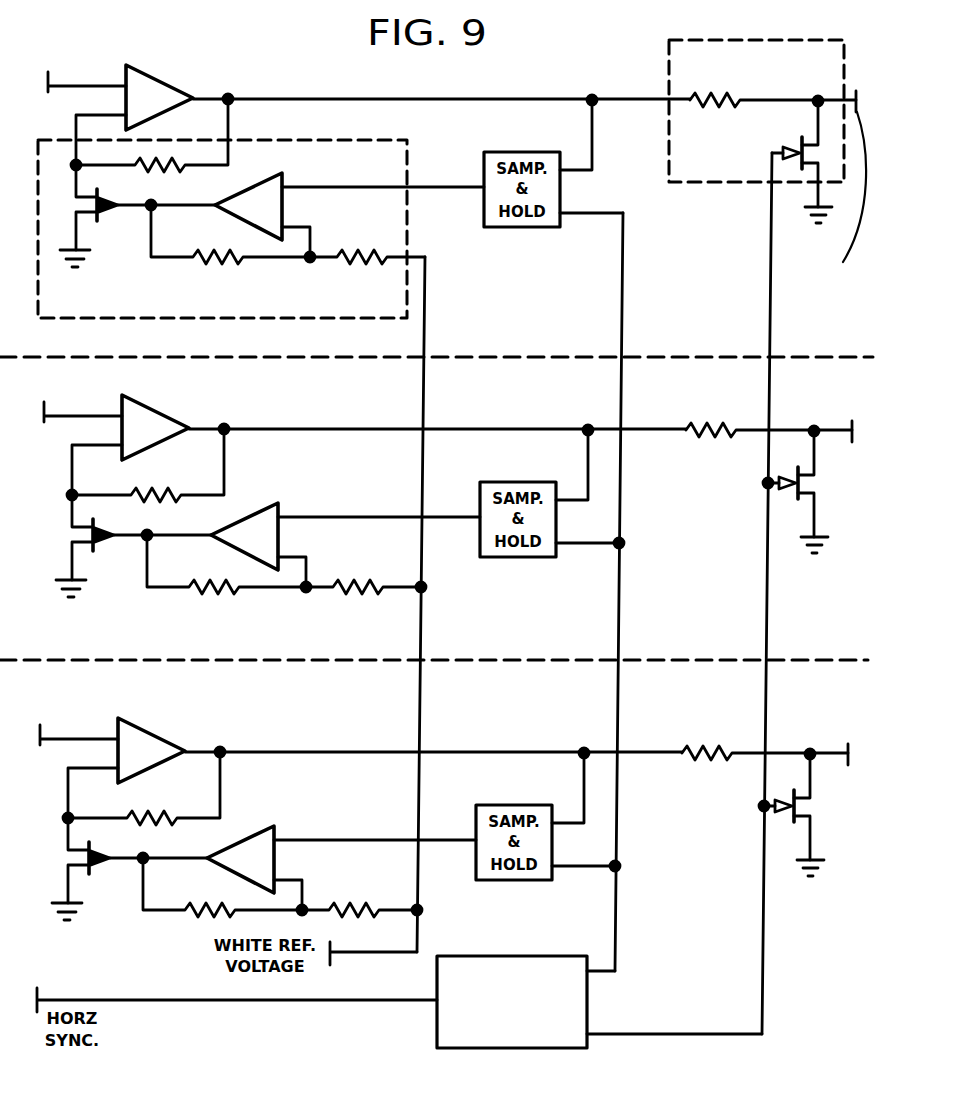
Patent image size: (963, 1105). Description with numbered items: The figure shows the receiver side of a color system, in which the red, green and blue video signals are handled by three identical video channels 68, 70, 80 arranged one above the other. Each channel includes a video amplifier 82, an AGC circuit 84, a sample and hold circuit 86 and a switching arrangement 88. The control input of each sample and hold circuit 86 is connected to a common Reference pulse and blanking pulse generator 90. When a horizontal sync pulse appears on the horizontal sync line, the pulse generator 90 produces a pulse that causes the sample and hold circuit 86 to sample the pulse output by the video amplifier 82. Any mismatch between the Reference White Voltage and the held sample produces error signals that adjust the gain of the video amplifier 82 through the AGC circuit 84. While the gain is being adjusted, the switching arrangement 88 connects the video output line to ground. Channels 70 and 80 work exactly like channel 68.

The video channel 68 is at (452, 176).
The video channel 70 is at (708, 605).
The video channel 80 is at (705, 887).
The video amplifier 82 is at (147, 79).
The AGC circuit 84 is at (363, 141).
The sample and hold circuit 86 is at (541, 151).
The switching arrangement 88 is at (665, 70).
The Reference pulse and blanking pulse generator 90 is at (510, 953).